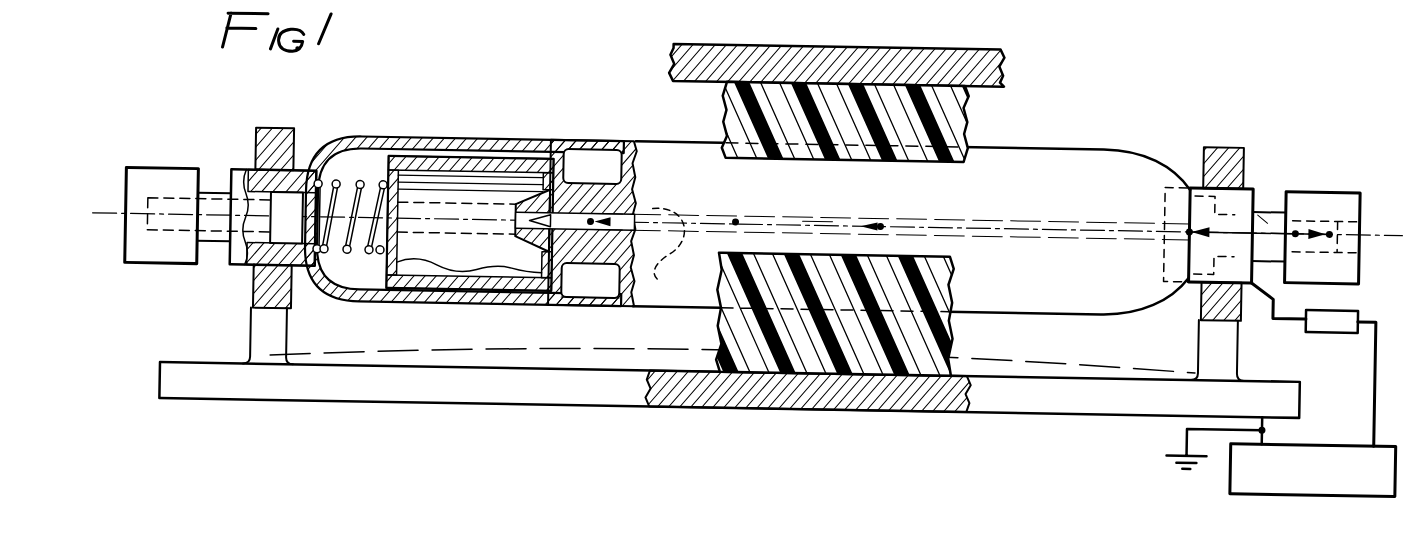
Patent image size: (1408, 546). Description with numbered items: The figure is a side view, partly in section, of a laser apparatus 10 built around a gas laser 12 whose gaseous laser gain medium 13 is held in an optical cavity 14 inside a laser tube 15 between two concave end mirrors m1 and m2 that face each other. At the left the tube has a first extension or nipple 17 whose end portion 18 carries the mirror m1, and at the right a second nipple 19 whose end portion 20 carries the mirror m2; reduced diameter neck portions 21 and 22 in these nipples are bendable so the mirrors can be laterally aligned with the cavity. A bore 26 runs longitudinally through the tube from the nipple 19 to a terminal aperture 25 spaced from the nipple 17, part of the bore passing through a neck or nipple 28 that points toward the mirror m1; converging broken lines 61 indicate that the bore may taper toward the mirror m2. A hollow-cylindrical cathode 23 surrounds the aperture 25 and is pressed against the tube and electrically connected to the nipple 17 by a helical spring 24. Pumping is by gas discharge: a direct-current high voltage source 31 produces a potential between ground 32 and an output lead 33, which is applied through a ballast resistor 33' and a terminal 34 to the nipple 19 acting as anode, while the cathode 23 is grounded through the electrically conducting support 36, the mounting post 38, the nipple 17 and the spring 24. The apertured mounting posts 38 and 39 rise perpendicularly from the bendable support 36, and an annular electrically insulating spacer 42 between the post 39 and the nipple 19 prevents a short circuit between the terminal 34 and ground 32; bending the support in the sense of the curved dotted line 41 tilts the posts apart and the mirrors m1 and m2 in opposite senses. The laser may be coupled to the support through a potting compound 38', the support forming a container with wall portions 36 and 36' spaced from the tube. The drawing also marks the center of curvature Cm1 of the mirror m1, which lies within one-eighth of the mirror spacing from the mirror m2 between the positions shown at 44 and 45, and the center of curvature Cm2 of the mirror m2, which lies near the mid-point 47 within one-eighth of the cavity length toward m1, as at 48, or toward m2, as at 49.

The laser apparatus 10 is at (587, 312).
The gas laser 12 is at (1085, 131).
The laser gain medium 13 is at (533, 208).
The optical cavity 14 is at (432, 168).
The laser tube 15 is at (600, 133).
The first extension or nipple 17 is at (245, 168).
The end portion 18 is at (124, 238).
The extension or nipple 19 is at (1267, 193).
The end portion 20 is at (1352, 263).
The reduced diameter neck portion 21 is at (207, 191).
The reduced diameter neck portion 22 is at (1268, 193).
The hollow-cylindrical cathode 23 is at (380, 152).
The helical spring 24 is at (345, 178).
The terminal aperture 25 is at (508, 216).
The bore 26 is at (563, 268).
The neck or nipple 28 is at (578, 160).
The direct-current high voltage source 31 is at (1340, 475).
The ground 32 is at (1186, 427).
The output lead 33 is at (1351, 383).
The ballast resistor 33' is at (1324, 342).
The terminal 34 is at (1262, 282).
The electrically conducting support 36 is at (704, 273).
The wall portion 36' is at (704, 273).
The mounting post 38 is at (704, 273).
The potting compound 38' is at (894, 276).
The mounting post 39 is at (1198, 323).
The curved dotted line 41 is at (690, 343).
The annular electrically insulating spacer 42 is at (1200, 133).
The center of curvature position 44 is at (1330, 228).
The center of curvature position 45 is at (1187, 216).
The mid-point 47 is at (733, 212).
The range limit toward m1 48 is at (600, 213).
The range limit toward m2 49 is at (878, 214).
The converging broken lines 61 is at (676, 249).
The end mirror m1 is at (135, 206).
The end mirror m2 is at (1355, 210).
The center of curvature of mirror m1 Cm1 is at (1293, 214).
The center of curvature of mirror m2 Cm2 is at (800, 210).